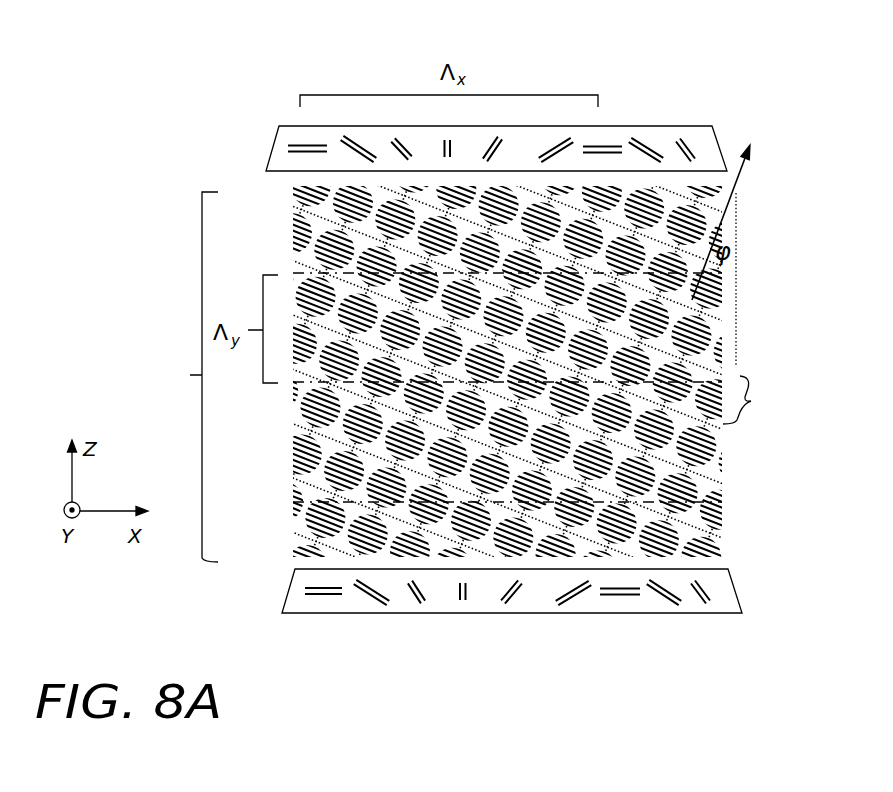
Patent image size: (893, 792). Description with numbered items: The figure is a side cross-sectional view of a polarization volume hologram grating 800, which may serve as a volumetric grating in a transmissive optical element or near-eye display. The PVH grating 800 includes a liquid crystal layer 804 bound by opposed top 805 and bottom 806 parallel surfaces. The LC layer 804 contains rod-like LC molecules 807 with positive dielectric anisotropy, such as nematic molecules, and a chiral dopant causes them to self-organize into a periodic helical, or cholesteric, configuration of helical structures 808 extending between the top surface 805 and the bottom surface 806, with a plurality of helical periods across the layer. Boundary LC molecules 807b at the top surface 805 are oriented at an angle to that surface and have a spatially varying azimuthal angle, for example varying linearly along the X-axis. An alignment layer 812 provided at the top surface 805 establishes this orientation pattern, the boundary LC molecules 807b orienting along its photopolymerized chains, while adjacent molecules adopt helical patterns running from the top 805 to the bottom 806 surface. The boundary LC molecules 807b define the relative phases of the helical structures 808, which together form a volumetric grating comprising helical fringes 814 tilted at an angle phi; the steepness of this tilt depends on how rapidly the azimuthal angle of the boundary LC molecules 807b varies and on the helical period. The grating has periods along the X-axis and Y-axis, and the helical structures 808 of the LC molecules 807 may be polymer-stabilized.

The polarization volume hologram (PVH) grating 800 is at (537, 41).
The top parallel surface 805 is at (707, 143).
The alignment layer 812 is at (256, 170).
The boundary LC molecules 807b is at (646, 143).
The bottom parallel surface 806 is at (652, 613).
The liquid crystal (LC) layer 804 is at (446, 394).
The helical structures 808 is at (289, 415).
The rod-like LC molecules 807 is at (350, 548).
The helical fringes 814 is at (757, 402).